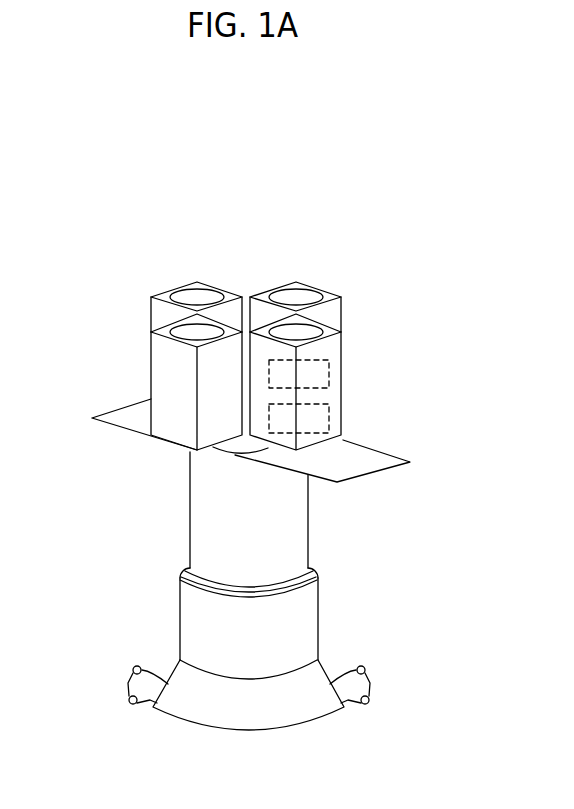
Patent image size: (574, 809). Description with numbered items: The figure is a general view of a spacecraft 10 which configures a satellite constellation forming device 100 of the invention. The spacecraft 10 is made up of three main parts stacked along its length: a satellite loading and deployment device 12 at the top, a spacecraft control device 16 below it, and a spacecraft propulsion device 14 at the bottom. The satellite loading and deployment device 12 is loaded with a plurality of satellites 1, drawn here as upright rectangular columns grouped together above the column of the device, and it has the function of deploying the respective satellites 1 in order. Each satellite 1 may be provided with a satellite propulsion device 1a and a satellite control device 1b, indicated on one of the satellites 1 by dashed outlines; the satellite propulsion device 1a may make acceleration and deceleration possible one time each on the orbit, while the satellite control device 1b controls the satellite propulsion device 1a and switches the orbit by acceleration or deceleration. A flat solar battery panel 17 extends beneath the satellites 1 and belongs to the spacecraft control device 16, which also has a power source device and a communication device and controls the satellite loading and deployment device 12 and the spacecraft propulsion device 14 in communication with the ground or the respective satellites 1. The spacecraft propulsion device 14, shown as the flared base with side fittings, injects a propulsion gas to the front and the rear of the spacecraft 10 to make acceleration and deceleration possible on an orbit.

The satellite constellation forming device 100 is at (149, 164).
The spacecraft 10 is at (319, 219).
The satellite 1 is at (170, 373).
The satellite propulsion device 1a is at (323, 375).
The satellite control device 1b is at (317, 420).
The solar battery panel 17 is at (345, 467).
The satellite loading and deployment device 12 is at (162, 479).
The spacecraft control device 16 is at (158, 597).
The spacecraft propulsion device 14 is at (146, 730).